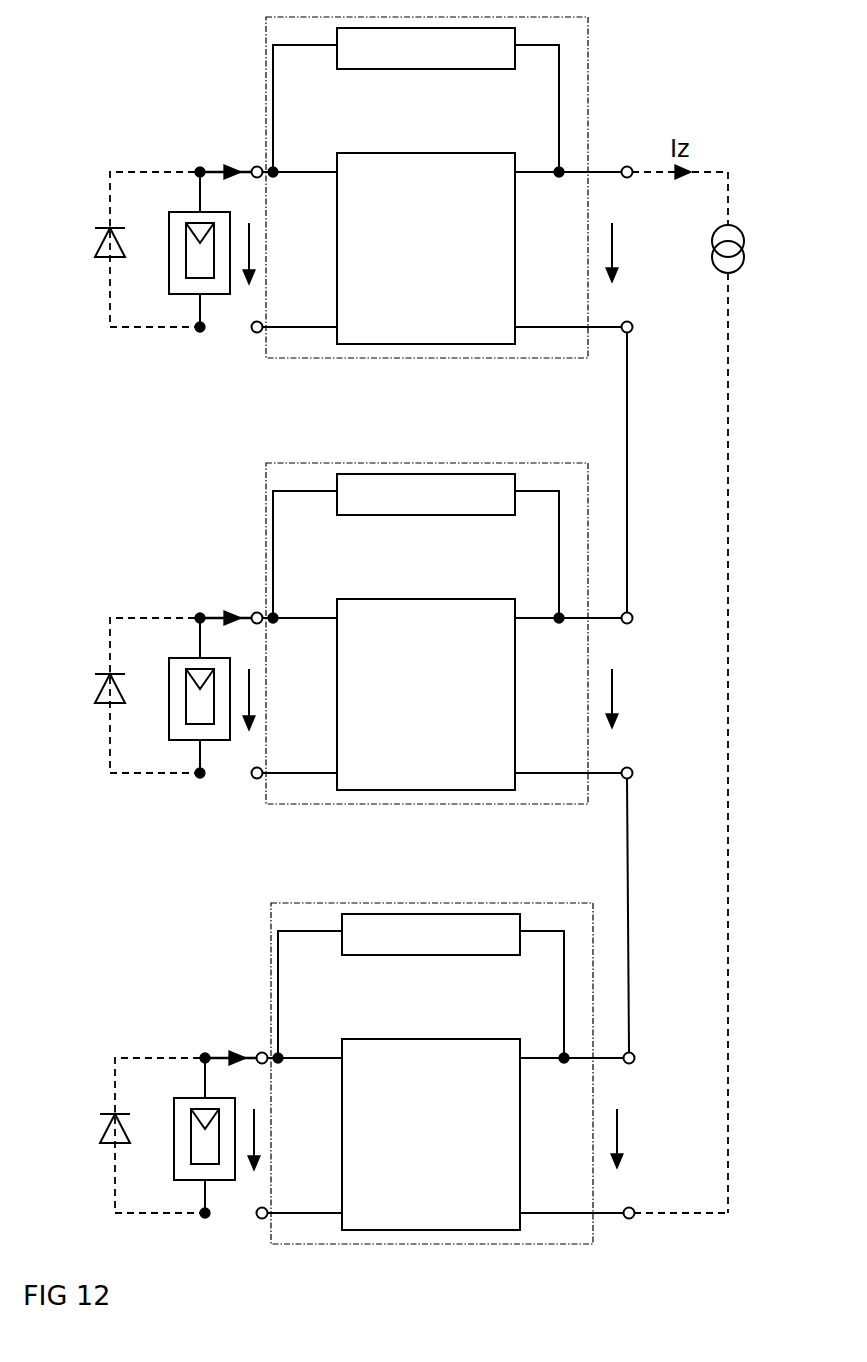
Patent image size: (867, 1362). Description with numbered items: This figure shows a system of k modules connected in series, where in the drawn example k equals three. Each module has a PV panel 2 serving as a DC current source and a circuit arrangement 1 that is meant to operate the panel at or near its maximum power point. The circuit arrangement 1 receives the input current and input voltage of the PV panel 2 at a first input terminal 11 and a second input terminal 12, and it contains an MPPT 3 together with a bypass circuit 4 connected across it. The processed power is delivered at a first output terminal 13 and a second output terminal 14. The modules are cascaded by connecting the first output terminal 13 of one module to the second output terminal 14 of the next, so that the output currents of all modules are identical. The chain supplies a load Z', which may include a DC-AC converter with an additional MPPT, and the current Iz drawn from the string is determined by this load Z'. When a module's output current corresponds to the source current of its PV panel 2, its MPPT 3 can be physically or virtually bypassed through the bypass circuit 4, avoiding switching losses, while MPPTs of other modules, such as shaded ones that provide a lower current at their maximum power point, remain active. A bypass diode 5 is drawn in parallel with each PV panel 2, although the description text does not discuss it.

The circuit arrangement 1 is at (263, 52).
The PV panel 2 is at (167, 252).
The MPPT 3 is at (420, 153).
The bypass circuit 4 is at (398, 70).
The bypass diode 5 is at (100, 222).
The input terminal 11 is at (253, 166).
The input terminal 12 is at (253, 332).
The output terminal 13 is at (628, 166).
The output terminal 14 is at (635, 329).
The load Z is at (745, 237).